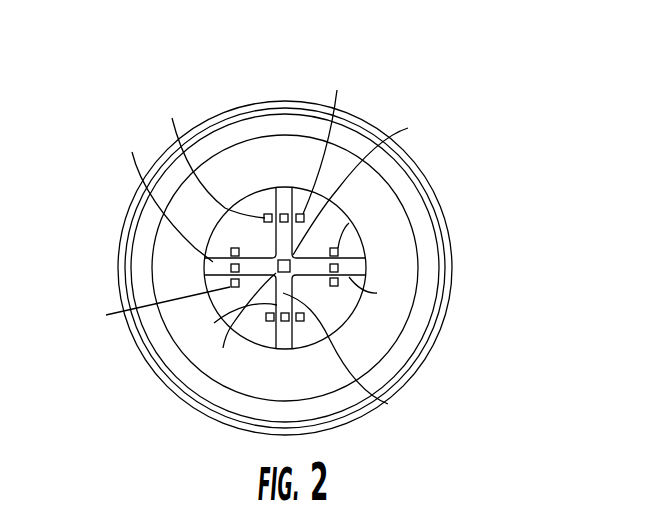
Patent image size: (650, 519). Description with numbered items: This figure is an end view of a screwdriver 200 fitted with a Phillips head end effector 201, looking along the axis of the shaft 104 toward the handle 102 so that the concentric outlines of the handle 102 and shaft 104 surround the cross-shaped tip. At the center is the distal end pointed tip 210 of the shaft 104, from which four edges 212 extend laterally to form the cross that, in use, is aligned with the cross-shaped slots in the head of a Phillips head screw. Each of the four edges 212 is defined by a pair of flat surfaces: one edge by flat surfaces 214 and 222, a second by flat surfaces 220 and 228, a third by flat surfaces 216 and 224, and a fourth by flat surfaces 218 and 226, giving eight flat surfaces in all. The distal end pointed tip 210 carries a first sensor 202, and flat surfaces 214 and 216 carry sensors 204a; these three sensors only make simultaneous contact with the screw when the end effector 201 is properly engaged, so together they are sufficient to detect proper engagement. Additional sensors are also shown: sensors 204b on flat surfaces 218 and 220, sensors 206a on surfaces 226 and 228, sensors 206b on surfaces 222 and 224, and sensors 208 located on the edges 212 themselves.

The screwdriver 200 is at (458, 74).
The handle 102 is at (440, 184).
The shaft 104 is at (412, 349).
The Phillips head end effector 201 is at (180, 358).
The first sensor 202 is at (320, 230).
The sensors 204a is at (303, 215).
The sensors 204b is at (231, 252).
The sensors 206a is at (231, 285).
The sensors 206b is at (267, 213).
The sensors 208 is at (285, 214).
The distal end pointed tip 210 is at (232, 325).
The edges 212 is at (346, 341).
The flat surface 214 is at (238, 338).
The flat surface 216 is at (333, 135).
The flat surface 218 is at (231, 252).
The flat surface 220 is at (382, 291).
The flat surface 222 is at (392, 404).
The flat surface 224 is at (210, 152).
The flat surface 226 is at (150, 307).
The flat surface 228 is at (349, 223).